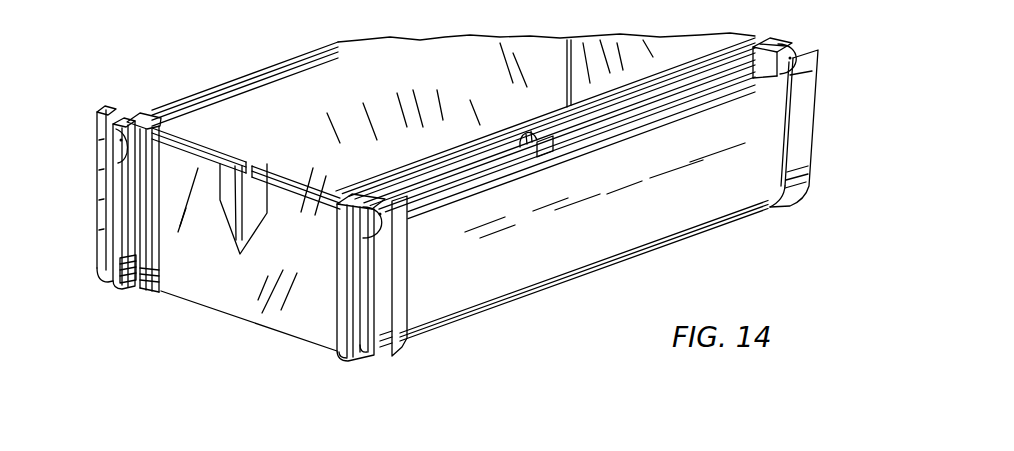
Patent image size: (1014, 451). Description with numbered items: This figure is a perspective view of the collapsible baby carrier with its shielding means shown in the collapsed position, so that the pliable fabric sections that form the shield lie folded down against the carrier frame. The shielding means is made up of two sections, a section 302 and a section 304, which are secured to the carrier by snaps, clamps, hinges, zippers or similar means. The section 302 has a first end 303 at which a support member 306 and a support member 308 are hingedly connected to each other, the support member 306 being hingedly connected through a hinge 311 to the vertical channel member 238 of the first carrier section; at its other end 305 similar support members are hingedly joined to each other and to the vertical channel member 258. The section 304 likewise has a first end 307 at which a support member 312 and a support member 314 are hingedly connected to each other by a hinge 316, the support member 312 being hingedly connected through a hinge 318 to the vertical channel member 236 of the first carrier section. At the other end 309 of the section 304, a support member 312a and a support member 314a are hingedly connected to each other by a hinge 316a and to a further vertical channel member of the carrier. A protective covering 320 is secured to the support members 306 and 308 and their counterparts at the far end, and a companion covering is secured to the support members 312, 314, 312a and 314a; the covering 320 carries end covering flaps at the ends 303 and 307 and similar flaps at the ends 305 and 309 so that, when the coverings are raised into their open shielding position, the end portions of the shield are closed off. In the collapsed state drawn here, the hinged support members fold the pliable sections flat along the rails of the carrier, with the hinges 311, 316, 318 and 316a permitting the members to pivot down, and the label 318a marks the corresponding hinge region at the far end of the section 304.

The section of the shielding means 302 is at (86, 153).
The first end 303 is at (116, 283).
The section of the shielding means 304 is at (523, 250).
The other end 305 is at (770, 24).
The support member 306 is at (128, 245).
The first end 307 is at (336, 368).
The support member 308 is at (108, 213).
The other end 309 is at (804, 44).
The hinge 311 is at (122, 122).
The support member 312 is at (340, 358).
The support member 312a is at (794, 34).
The support member 314 is at (395, 313).
The support member 314a is at (808, 157).
The hinge 316 is at (362, 358).
The hinge 316a is at (765, 210).
The hinge 318 is at (380, 212).
The top rail end 318a is at (812, 76).
The protective covering 320 is at (613, 232).
The vertical channel member 236 is at (337, 303).
The vertical channel member 238 is at (147, 258).
The vertical channel member 258 is at (143, 117).